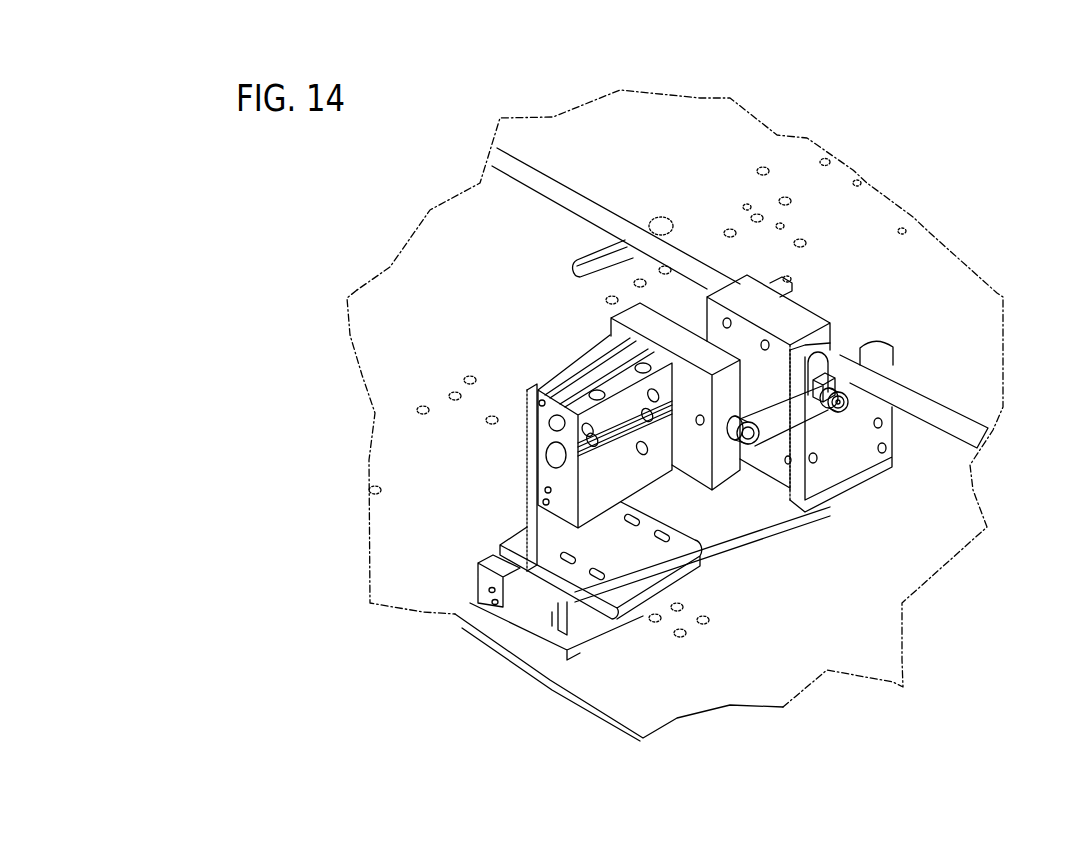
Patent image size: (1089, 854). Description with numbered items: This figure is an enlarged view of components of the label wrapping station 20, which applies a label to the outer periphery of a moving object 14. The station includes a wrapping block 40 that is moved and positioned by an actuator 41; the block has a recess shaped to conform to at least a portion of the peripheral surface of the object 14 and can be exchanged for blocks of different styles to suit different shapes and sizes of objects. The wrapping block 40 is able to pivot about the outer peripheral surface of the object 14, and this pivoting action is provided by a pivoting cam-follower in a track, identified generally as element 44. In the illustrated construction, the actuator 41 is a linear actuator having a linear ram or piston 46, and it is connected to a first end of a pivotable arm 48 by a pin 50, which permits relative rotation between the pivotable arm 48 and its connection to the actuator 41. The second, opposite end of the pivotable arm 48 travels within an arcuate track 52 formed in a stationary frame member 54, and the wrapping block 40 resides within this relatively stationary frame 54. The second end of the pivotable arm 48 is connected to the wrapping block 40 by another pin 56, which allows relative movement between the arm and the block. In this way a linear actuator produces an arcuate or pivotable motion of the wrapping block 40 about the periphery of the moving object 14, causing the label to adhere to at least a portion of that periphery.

The moving object 14 is at (607, 209).
The label wrapping station 20 is at (545, 295).
The wrapping block 40 is at (808, 310).
The actuator 41 is at (522, 485).
The pivoting cam-follower in a track 44 is at (848, 447).
The linear ram or piston 46 is at (566, 462).
The pivotable arm 48 is at (769, 425).
The pin 50 is at (742, 447).
The arcuate track 52 is at (858, 385).
The stationary frame member 54 is at (860, 407).
The pin 56 is at (845, 407).